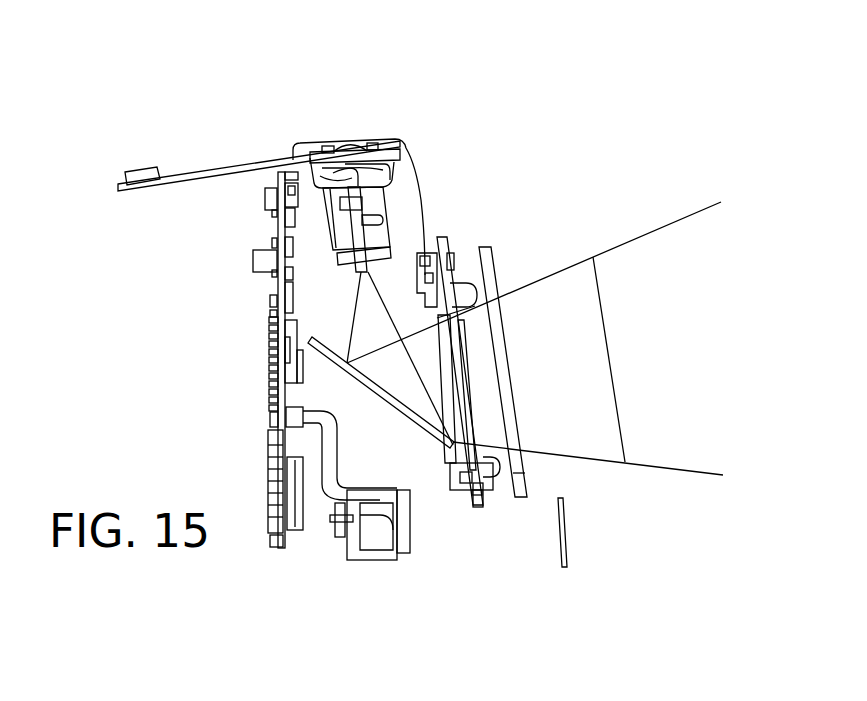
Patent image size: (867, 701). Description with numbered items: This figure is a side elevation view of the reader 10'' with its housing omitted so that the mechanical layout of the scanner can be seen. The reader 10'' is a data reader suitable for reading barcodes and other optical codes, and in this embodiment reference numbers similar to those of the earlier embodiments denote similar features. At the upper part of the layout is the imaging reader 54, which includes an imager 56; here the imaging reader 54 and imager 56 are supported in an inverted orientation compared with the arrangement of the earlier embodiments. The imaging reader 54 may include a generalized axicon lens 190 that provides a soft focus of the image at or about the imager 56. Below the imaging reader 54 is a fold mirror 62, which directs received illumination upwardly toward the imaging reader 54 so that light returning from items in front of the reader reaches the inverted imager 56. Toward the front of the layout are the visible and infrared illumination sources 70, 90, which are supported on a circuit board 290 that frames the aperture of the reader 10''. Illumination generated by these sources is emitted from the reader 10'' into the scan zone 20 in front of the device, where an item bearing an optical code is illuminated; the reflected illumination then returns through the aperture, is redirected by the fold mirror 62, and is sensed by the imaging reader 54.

The reader 10'' is at (412, 326).
The scan zone 20 is at (535, 464).
The imaging reader 54 is at (408, 116).
The imager 56 is at (350, 142).
The fold mirror 62 is at (380, 395).
The visible illumination source 70 is at (478, 295).
The infrared illumination source 90 is at (475, 275).
The axicon lens 190 is at (393, 220).
The circuit board 290 is at (480, 505).